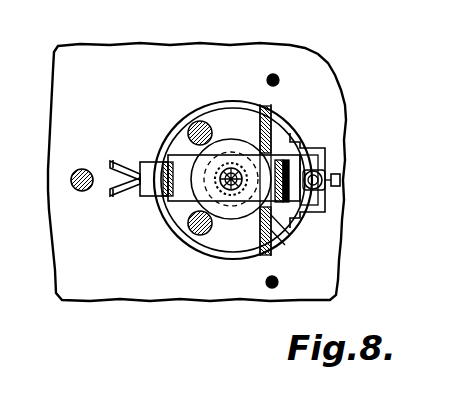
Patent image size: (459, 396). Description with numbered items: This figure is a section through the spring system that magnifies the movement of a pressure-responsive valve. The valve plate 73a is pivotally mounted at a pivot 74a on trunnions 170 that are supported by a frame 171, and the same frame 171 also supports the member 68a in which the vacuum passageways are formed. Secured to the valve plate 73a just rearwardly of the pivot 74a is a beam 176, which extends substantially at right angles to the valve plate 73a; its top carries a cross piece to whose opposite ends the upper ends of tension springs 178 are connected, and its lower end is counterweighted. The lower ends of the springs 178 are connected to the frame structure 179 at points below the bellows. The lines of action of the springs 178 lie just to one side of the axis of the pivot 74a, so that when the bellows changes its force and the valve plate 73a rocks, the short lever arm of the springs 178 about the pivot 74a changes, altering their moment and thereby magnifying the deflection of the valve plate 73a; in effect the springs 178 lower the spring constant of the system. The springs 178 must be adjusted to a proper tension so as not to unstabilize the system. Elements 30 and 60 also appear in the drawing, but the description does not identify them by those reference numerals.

The frame structure 179 is at (139, 31).
The tension springs 178 is at (268, 79).
The member 68a is at (175, 122).
The frame 171 is at (198, 256).
The valve plate 73a is at (171, 206).
The cable 30 is at (130, 151).
The cable 60 is at (126, 193).
The trunnions 170 is at (298, 126).
The beam 176 is at (318, 153).
The pivot 74a is at (317, 205).